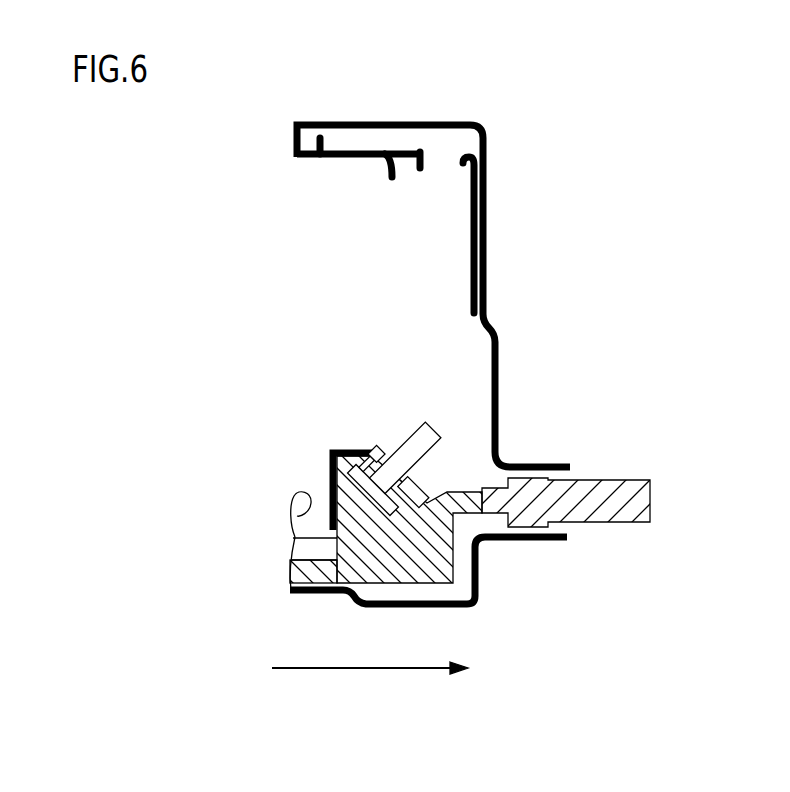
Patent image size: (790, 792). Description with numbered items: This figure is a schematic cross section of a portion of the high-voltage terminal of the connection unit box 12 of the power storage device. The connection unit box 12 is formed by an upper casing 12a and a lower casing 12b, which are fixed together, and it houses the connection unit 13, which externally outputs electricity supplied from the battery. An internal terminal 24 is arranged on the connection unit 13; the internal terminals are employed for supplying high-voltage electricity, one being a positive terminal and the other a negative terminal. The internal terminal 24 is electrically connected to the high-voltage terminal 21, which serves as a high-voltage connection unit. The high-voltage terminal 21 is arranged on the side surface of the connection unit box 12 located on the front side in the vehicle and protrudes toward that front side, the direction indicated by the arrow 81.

The connection unit box 12 is at (151, 262).
The upper casing 12a is at (333, 120).
The lower casing 12b is at (317, 592).
The connection unit 13 is at (372, 562).
The high-voltage terminal 21 is at (621, 508).
The internal terminal 24 is at (424, 435).
The arrow 81 is at (363, 668).